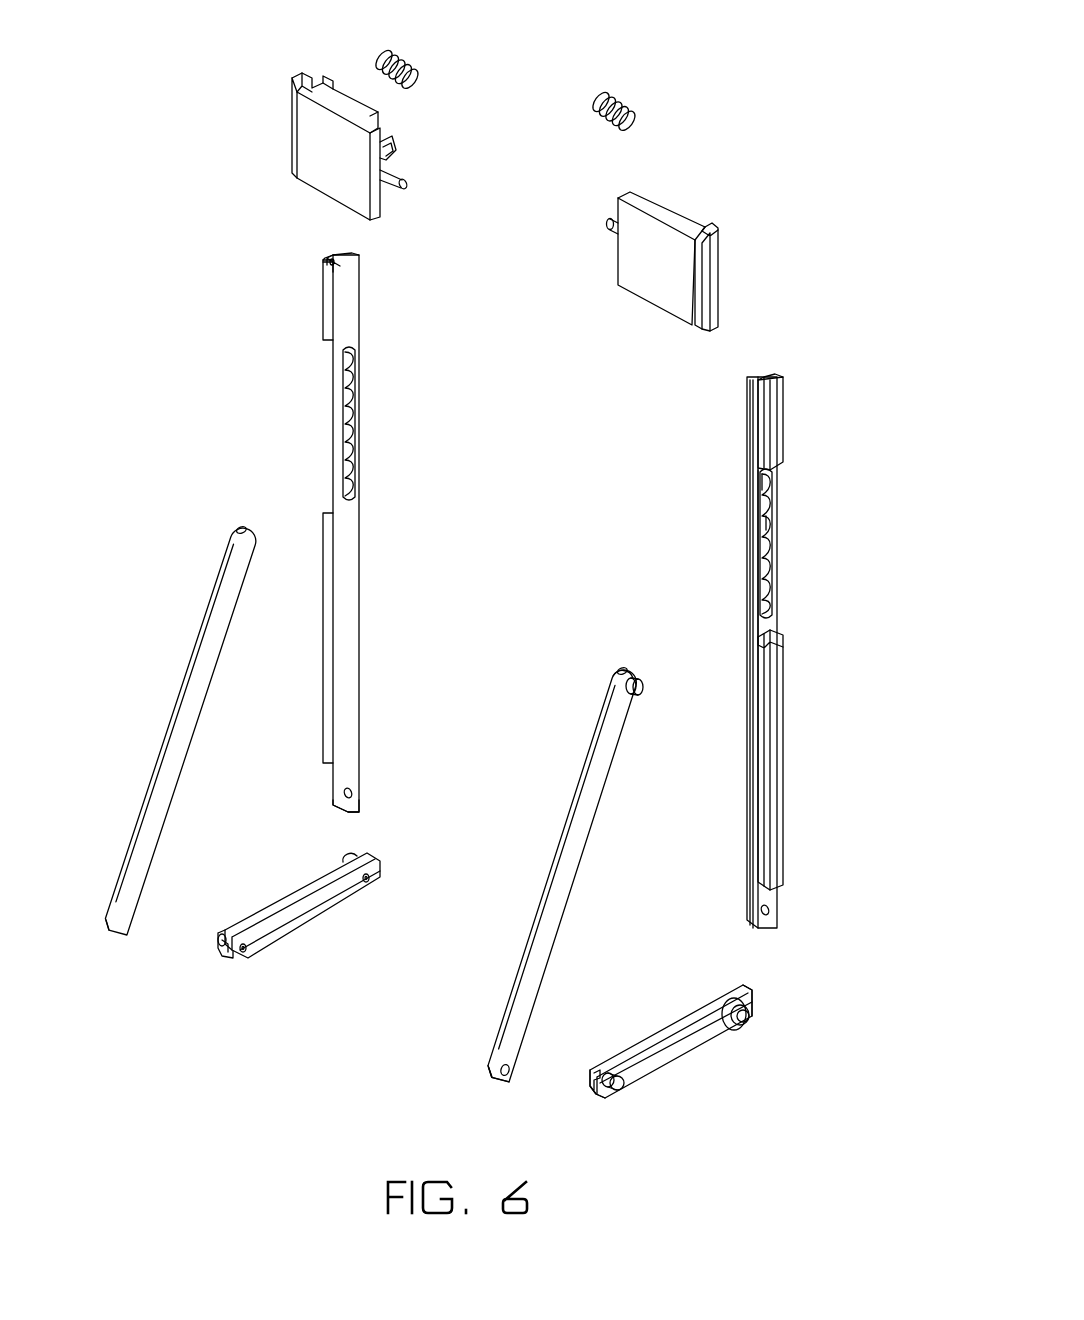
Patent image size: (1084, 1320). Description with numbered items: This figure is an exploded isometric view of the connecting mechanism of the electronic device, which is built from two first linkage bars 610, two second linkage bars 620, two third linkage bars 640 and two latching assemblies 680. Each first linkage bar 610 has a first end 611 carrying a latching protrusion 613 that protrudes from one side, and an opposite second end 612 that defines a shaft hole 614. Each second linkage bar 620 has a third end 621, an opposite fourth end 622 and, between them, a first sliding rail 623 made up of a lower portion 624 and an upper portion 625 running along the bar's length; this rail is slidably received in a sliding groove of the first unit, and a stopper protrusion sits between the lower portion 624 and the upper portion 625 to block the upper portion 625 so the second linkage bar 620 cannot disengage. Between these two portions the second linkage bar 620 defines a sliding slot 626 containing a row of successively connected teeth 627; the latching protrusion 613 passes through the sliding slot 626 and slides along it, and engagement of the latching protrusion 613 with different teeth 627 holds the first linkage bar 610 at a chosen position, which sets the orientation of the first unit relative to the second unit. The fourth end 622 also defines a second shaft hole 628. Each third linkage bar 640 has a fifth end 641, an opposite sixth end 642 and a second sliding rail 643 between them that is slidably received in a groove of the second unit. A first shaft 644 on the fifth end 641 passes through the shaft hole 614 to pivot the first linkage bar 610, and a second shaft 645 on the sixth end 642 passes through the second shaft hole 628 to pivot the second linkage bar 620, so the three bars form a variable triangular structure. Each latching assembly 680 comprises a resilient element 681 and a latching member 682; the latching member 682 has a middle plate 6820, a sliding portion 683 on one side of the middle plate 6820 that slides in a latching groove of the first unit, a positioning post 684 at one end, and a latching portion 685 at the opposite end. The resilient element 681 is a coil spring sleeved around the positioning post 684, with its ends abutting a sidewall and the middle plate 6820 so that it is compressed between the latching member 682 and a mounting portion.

The first linkage bar 610 is at (188, 728).
The first end 611 is at (608, 676).
The second end 612 is at (492, 1078).
The latching protrusion 613 is at (636, 686).
The shaft hole 614 is at (502, 1066).
The second linkage bar 620 is at (347, 578).
The third end 621 is at (350, 262).
The fourth end 622 is at (355, 800).
The first sliding rail 623 is at (647, 398).
The lower portion 624 is at (765, 670).
The upper portion 625 is at (772, 437).
The sliding slot 626 is at (770, 520).
The teeth 627 is at (771, 548).
The second shaft hole 628 is at (351, 790).
The third linkage bar 640 is at (270, 913).
The fifth end 641 is at (750, 986).
The sixth end 642 is at (598, 1078).
The second sliding rail 643 is at (285, 925).
The first shaft 644 is at (745, 1020).
The second shaft 645 is at (619, 1090).
The latching assembly 680 is at (756, 70).
The resilient element 681 is at (637, 107).
The latching member 682 is at (655, 235).
The middle plate 6820 is at (337, 170).
The sliding portion 683 is at (394, 150).
The positioning post 684 is at (406, 182).
The latching portion 685 is at (718, 273).